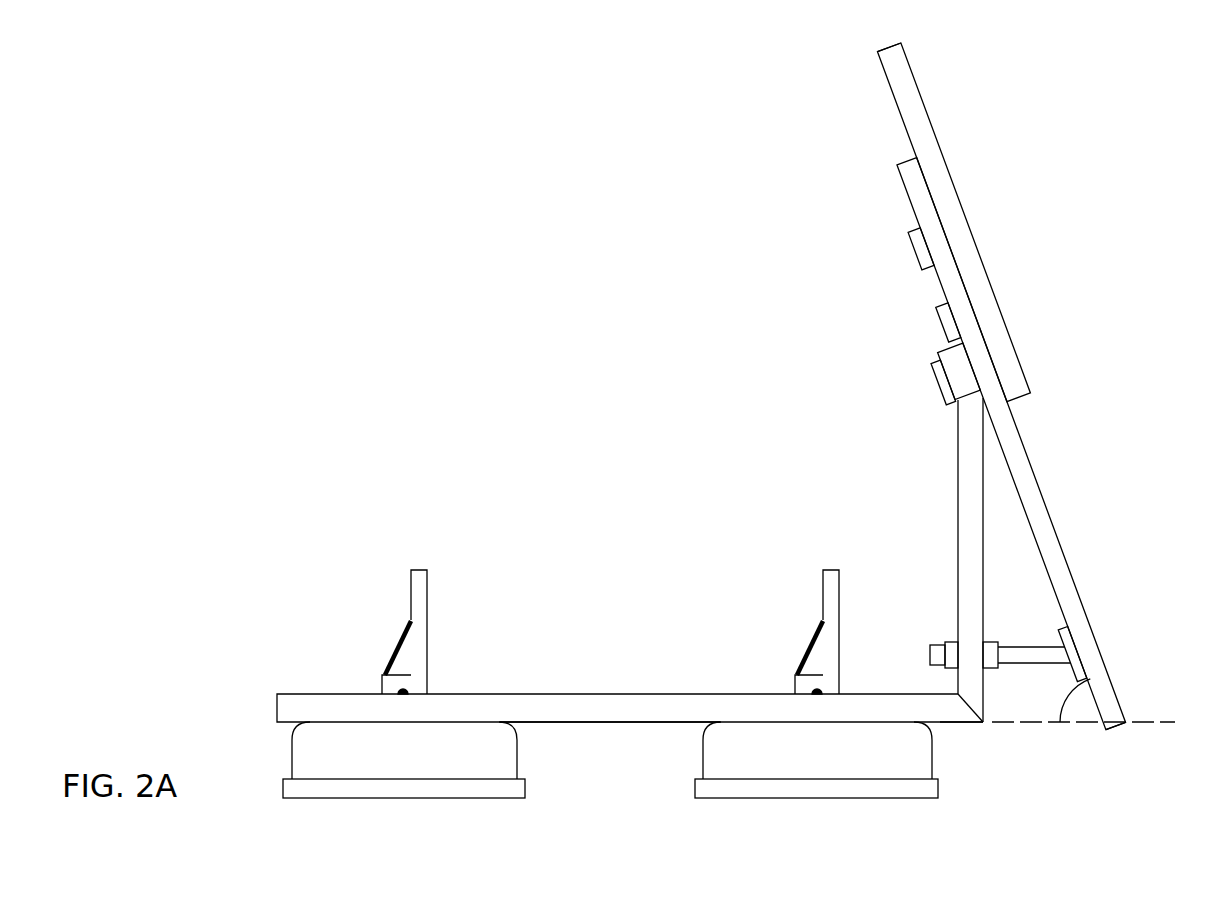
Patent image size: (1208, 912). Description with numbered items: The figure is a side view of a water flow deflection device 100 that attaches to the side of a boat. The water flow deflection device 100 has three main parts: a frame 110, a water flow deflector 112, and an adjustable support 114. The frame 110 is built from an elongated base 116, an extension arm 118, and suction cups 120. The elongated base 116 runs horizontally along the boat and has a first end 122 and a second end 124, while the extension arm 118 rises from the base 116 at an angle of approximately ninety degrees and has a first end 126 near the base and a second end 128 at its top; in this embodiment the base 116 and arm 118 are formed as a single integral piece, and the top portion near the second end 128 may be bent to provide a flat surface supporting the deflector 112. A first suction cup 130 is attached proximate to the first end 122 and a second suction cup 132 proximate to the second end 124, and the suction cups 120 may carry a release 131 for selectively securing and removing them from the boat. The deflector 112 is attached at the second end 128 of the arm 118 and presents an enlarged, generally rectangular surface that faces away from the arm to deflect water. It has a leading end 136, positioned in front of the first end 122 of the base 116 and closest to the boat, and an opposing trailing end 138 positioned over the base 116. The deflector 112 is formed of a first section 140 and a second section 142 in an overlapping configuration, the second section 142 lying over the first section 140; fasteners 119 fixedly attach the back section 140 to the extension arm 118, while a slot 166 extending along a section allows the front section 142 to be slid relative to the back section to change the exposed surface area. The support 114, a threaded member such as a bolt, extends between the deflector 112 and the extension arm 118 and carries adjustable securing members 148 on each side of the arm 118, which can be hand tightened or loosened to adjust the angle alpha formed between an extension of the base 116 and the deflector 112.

The water flow deflection device 100 is at (406, 456).
The frame 110 is at (646, 558).
The water flow deflector 112 is at (1020, 191).
The adjustable support 114 is at (1037, 647).
The elongated base 116 is at (593, 727).
The extension arm 118 is at (958, 499).
The fasteners 119 is at (935, 388).
The suction cups 120 is at (698, 800).
The first end of the elongated base 122 is at (942, 707).
The second end of the elongated base 124 is at (293, 705).
The first end of the extension arm 126 is at (973, 675).
The second end of the extension arm 128 is at (937, 373).
The first suction cup 130 is at (822, 800).
The release 131 is at (410, 606).
The second suction cup 132 is at (357, 800).
The leading end of the deflector 136 is at (1117, 728).
The trailing end of the deflector 138 is at (891, 46).
The first section of the deflector 140 is at (1087, 612).
The second section of the deflector 142 is at (931, 113).
The adjustable securing members 148 is at (1000, 658).
The slot 166 is at (912, 258).